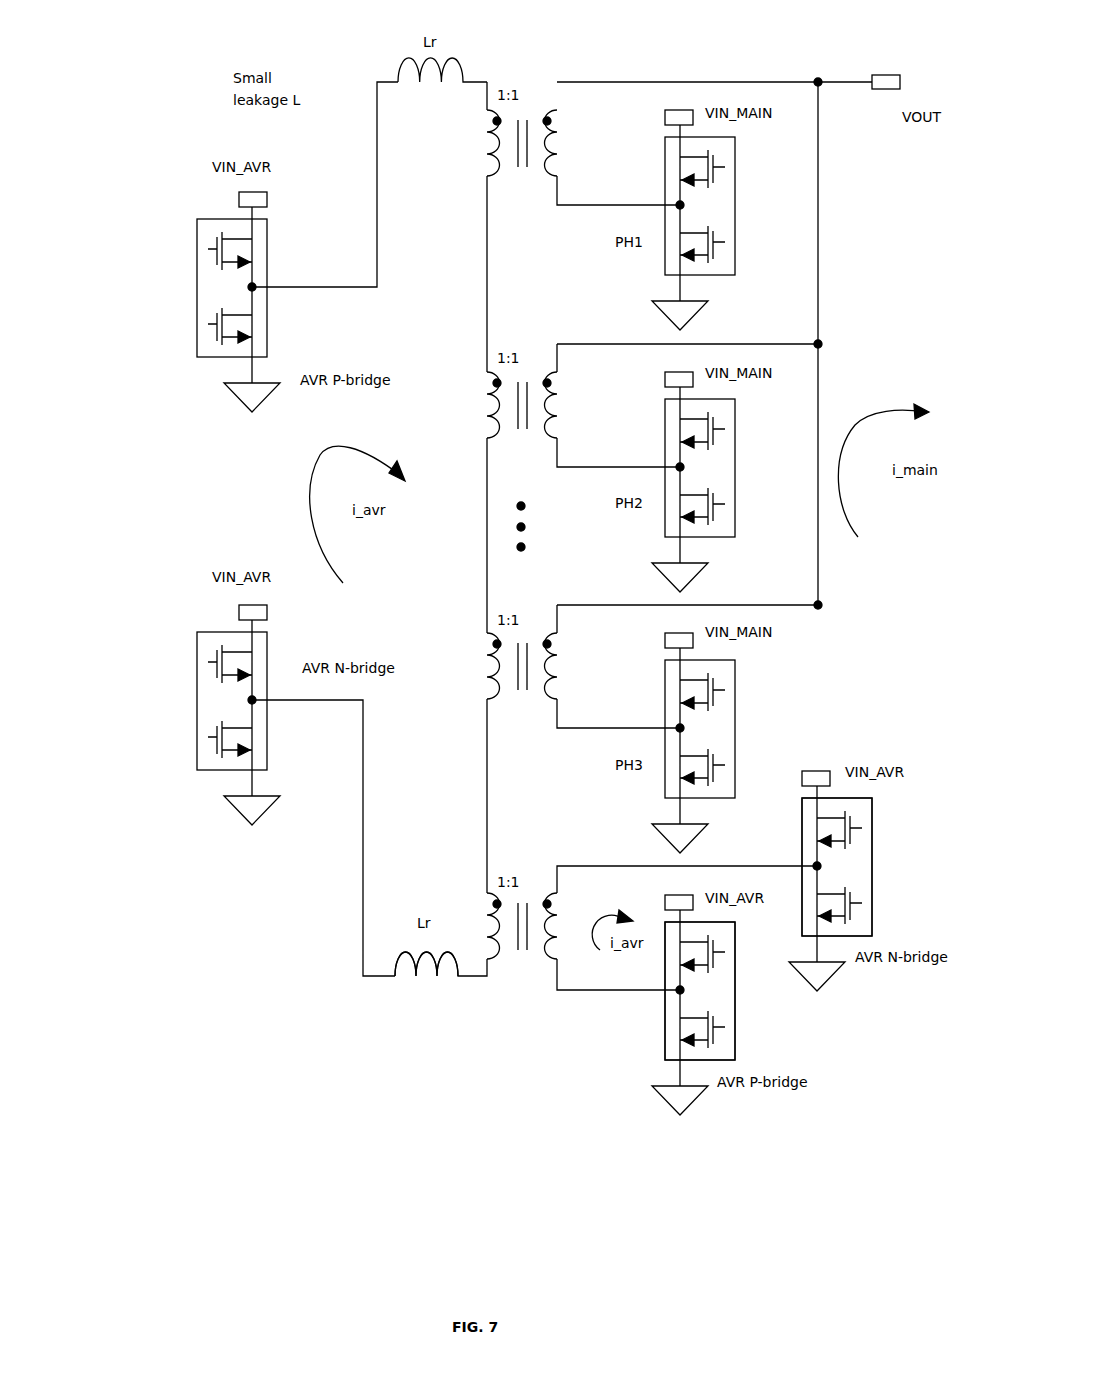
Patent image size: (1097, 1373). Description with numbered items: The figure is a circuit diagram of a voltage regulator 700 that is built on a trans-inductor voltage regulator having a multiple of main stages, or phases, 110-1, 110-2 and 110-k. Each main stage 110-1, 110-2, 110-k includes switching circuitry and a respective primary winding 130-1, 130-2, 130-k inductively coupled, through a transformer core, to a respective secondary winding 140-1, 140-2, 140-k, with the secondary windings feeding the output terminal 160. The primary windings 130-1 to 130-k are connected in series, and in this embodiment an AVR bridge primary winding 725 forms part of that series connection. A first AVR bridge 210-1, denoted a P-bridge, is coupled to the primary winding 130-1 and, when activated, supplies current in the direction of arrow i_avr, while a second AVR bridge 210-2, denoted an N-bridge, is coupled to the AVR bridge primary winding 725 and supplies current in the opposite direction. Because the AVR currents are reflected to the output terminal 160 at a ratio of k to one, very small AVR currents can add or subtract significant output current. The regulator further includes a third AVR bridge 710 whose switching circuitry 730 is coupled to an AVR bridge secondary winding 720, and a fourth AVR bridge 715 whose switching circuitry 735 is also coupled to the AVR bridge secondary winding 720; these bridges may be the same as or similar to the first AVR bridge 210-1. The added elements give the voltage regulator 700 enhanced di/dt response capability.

The voltage regulator 700 is at (485, 644).
The primary winding 130-1 is at (478, 149).
The primary winding 130-2 is at (483, 420).
The primary winding 130-k is at (473, 683).
The secondary winding 140-1 is at (571, 131).
The secondary winding 140-2 is at (575, 395).
The secondary winding 140-k is at (573, 657).
The output terminal 160 is at (900, 75).
The main stage 110-1 is at (847, 220).
The main stage 110-2 is at (847, 385).
The main stage 110-k is at (847, 742).
The first AVR bridge 210-1 is at (166, 296).
The second AVR bridge 210-2 is at (159, 716).
The AVR bridge primary winding 725 is at (483, 900).
The AVR bridge secondary winding 720 is at (537, 973).
The switching circuitry 735 is at (875, 853).
The fourth AVR bridge 715 is at (898, 886).
The third AVR bridge 710 is at (764, 995).
The switching circuitry 730 is at (737, 1007).